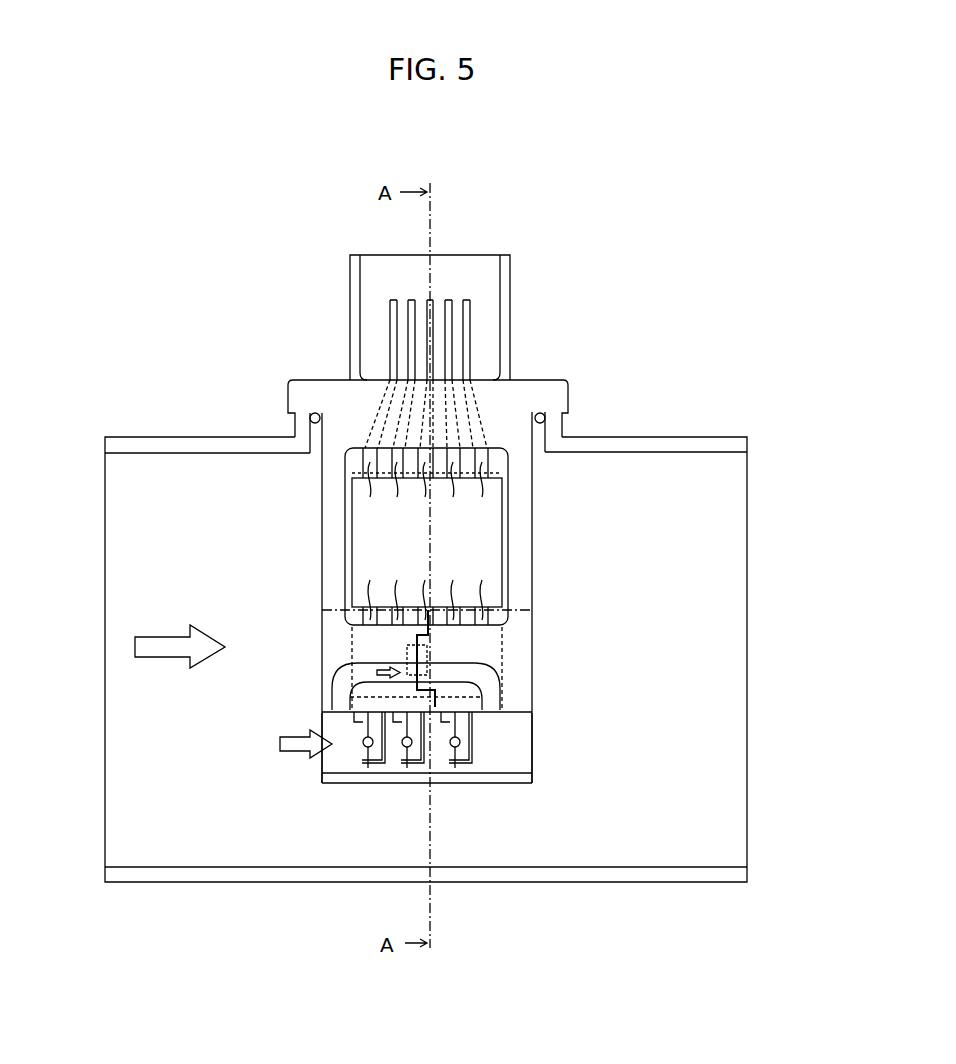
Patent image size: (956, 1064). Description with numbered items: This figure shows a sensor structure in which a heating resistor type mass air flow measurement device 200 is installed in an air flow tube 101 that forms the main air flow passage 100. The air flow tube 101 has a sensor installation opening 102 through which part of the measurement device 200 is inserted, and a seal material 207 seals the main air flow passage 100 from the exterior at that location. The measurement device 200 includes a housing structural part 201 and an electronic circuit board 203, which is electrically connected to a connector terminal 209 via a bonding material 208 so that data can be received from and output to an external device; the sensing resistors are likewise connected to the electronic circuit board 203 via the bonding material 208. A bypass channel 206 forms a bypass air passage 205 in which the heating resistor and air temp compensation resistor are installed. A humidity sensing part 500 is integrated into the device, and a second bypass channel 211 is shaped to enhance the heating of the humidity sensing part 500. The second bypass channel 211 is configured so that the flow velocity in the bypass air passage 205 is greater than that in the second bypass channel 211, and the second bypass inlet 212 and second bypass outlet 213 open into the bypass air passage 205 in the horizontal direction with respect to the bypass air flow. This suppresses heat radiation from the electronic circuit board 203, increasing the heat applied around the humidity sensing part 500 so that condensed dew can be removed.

The main air flow passage 100 is at (165, 803).
The air flow tube 101 is at (110, 877).
The sensor installation opening 102 is at (540, 438).
The heating resistor type mass air flow measurement device 200 is at (293, 392).
The housing structural part 201 is at (330, 503).
The electronic circuit board 203 is at (372, 553).
The bypass air passage 205 is at (522, 733).
The bypass channel 206 is at (525, 780).
The seal material 207 is at (541, 414).
The bonding material 208 is at (480, 588).
The connector terminal 209 is at (468, 300).
The second bypass channel 211 is at (343, 688).
The second bypass inlet 212 is at (343, 712).
The second bypass outlet 213 is at (493, 712).
The humidity sensing part 500 is at (415, 672).